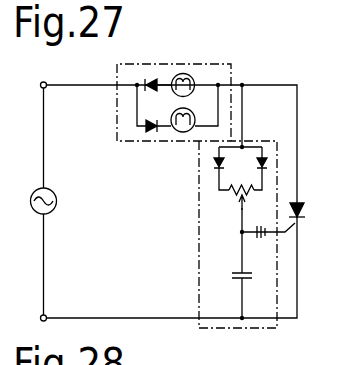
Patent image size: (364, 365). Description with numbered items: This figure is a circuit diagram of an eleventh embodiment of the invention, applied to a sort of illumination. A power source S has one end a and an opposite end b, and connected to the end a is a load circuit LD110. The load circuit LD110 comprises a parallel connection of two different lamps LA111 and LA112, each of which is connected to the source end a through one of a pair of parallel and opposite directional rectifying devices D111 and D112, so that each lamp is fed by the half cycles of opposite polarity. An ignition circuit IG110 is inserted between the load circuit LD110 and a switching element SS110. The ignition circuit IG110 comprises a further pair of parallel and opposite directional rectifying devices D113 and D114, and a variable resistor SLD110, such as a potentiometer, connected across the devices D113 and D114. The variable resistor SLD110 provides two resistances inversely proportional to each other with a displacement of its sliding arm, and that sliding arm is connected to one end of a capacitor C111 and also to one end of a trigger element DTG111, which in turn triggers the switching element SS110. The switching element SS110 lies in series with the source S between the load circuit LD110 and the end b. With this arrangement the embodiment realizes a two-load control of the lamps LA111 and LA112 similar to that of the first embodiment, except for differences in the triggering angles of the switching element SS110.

The end of the power source a is at (34, 87).
The terminal b is at (34, 321).
The power source S is at (49, 191).
The load circuit LD110 is at (236, 105).
The rectifying device D111 is at (151, 78).
The rectifying device D112 is at (150, 141).
The lamp LA111 is at (195, 78).
The lamp LA112 is at (195, 118).
The ignition circuit IG110 is at (240, 219).
The rectifying device D114 is at (234, 160).
The rectifying device D113 is at (268, 165).
The variable resistor SLD110 is at (256, 196).
The switching element SS110 is at (323, 211).
The trigger element DTG111 is at (262, 240).
The capacitor C111 is at (255, 275).